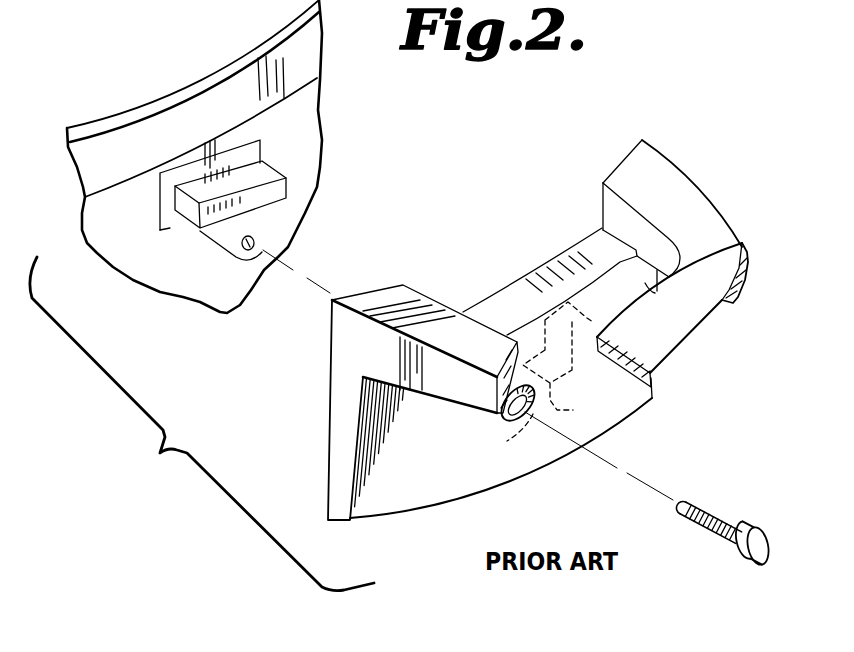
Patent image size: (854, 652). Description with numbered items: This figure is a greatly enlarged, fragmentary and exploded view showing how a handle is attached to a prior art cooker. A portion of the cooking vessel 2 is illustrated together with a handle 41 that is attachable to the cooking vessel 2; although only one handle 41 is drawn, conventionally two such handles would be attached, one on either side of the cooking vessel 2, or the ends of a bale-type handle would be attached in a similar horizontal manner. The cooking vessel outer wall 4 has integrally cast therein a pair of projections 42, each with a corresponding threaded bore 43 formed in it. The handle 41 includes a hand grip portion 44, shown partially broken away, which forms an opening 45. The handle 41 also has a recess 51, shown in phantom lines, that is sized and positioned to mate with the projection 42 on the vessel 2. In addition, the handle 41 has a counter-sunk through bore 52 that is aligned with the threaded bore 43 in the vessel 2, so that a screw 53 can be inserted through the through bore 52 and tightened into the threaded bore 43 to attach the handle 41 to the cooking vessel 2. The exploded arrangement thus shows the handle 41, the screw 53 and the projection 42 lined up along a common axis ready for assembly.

The cooking vessel 2 is at (104, 92).
The cooking vessel outer wall 4 is at (134, 233).
The handle 41 is at (554, 316).
The projection 42 is at (263, 168).
The threaded bore 43 is at (256, 245).
The hand grip portion 44 is at (717, 233).
The opening 45 is at (643, 300).
The recess 51 is at (573, 410).
The counter-sunk through bore 52 is at (507, 418).
The screw 53 is at (733, 522).